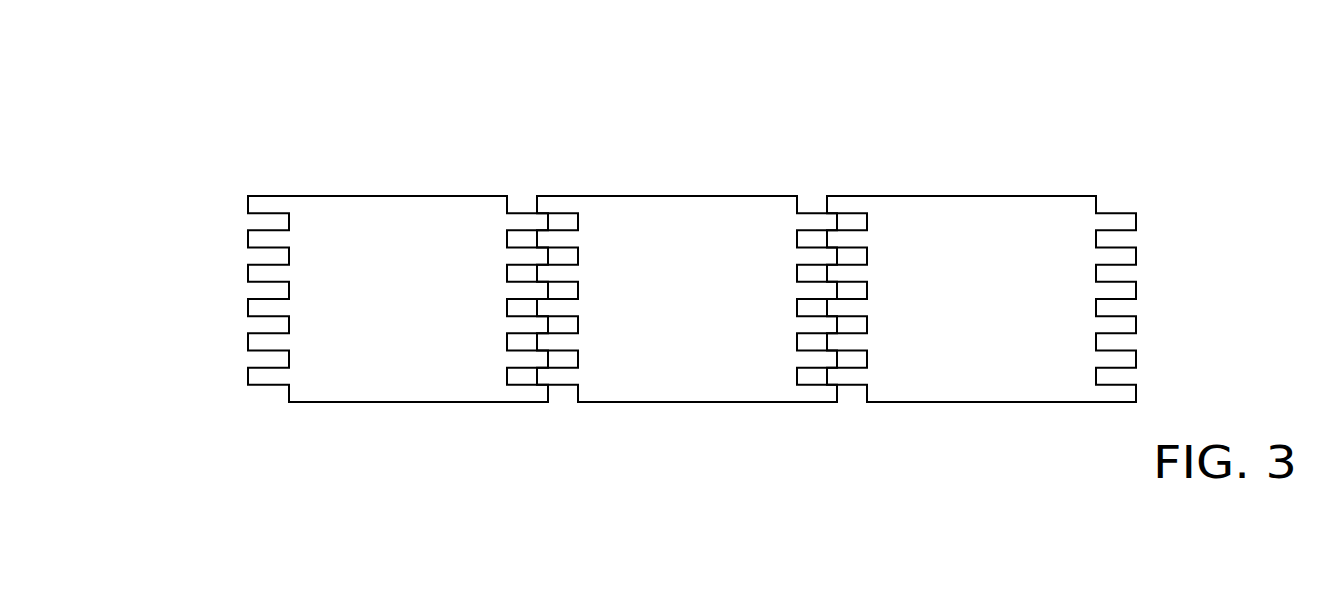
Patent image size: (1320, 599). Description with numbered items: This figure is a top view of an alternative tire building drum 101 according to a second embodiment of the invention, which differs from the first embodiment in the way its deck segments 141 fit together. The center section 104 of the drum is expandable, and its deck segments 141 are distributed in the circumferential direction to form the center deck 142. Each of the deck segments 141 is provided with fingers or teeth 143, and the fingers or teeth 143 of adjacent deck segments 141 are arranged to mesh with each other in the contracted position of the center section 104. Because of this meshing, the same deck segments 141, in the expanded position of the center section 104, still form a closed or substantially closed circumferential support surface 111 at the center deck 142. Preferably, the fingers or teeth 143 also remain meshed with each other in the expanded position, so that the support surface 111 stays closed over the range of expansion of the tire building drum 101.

The tire building drum 101 is at (200, 135).
The center section 104 is at (355, 394).
The circumferential support surface 111 is at (708, 313).
The deck segment 141 is at (373, 212).
The center deck 142 is at (1075, 373).
The fingers or teeth 143 is at (265, 377).